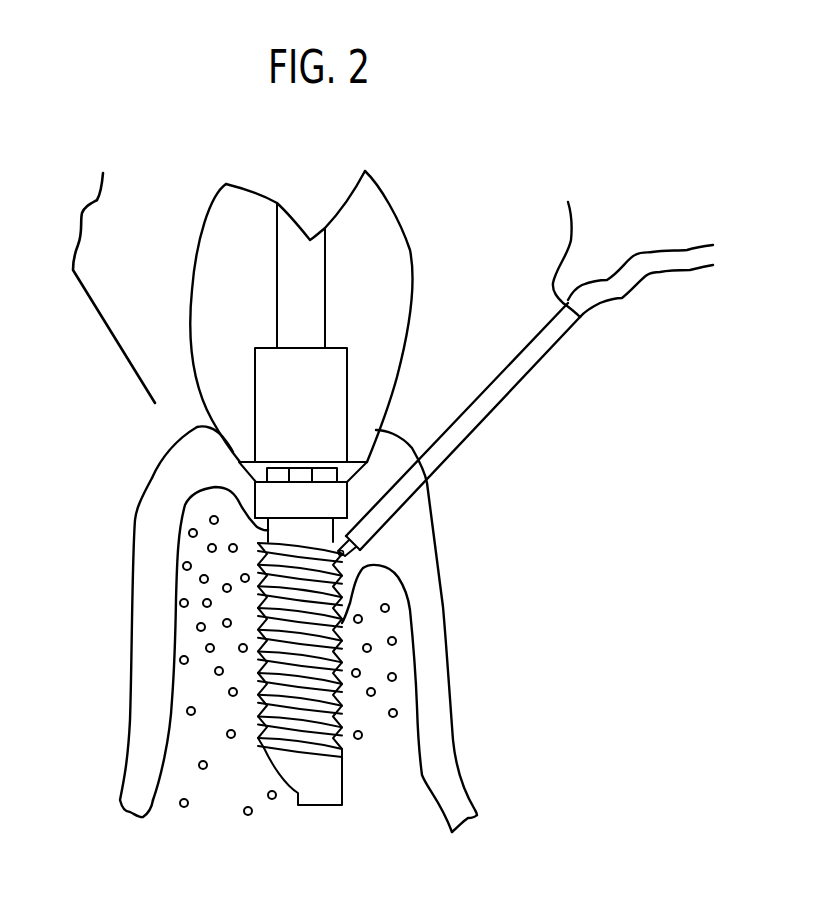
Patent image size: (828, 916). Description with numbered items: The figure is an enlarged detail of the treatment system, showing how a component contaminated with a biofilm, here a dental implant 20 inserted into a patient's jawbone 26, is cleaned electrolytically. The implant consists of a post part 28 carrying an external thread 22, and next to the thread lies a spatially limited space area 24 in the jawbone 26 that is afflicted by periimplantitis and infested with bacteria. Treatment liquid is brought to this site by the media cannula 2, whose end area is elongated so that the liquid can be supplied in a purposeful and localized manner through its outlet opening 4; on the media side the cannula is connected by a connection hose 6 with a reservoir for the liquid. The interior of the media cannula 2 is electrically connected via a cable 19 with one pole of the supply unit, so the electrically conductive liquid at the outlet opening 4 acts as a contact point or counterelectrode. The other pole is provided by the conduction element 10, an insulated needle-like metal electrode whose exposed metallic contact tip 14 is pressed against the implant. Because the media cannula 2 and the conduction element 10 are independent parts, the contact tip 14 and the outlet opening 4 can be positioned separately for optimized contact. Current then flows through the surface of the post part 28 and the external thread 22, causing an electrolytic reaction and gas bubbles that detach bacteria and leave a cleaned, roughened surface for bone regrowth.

The media cannula 2 is at (459, 442).
The outlet opening 4 is at (344, 557).
The connection hose 6 is at (652, 260).
The conduction element 10 is at (108, 332).
The contact tip 14 is at (155, 405).
The cable 19 is at (568, 235).
The dental implant 20 is at (386, 677).
The external thread 22 is at (345, 620).
The space area 24 is at (397, 693).
The jawbone 26 is at (385, 782).
The post part 28 is at (318, 807).